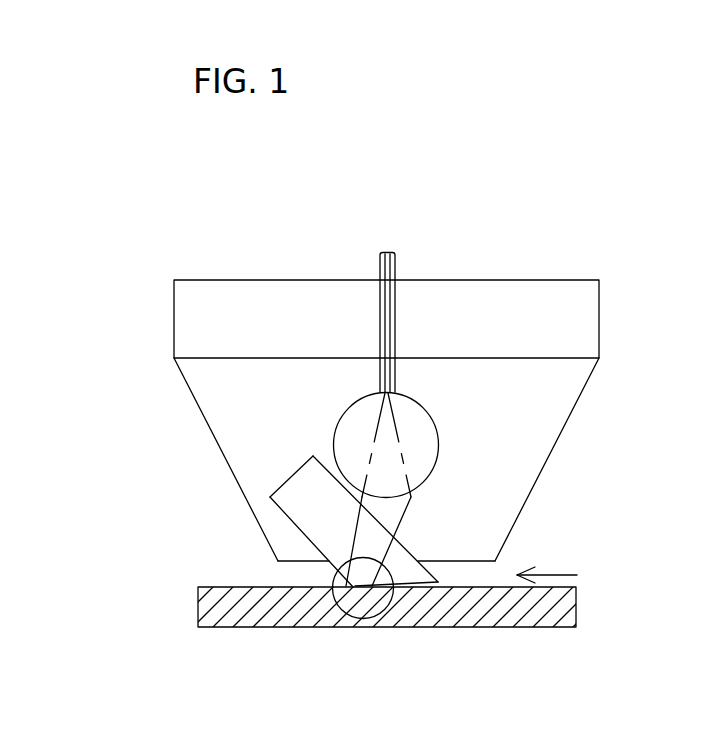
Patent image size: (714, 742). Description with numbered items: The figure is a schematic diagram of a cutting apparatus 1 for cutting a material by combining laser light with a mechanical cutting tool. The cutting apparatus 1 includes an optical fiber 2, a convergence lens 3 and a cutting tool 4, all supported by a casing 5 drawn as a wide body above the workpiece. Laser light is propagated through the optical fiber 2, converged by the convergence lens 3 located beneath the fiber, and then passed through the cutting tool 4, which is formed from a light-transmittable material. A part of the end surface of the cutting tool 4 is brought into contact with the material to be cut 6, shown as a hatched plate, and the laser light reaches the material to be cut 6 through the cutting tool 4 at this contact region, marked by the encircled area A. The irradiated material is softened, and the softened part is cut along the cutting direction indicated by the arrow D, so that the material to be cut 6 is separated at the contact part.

The cutting apparatus 1 is at (127, 258).
The optical fiber 2 is at (380, 265).
The convergence lens 3 is at (439, 444).
The cutting tool 4 is at (292, 477).
The casing 5 is at (522, 278).
The material to be cut 6 is at (527, 627).
The processing point A is at (363, 619).
The arrow indicating cutting direction D is at (558, 575).